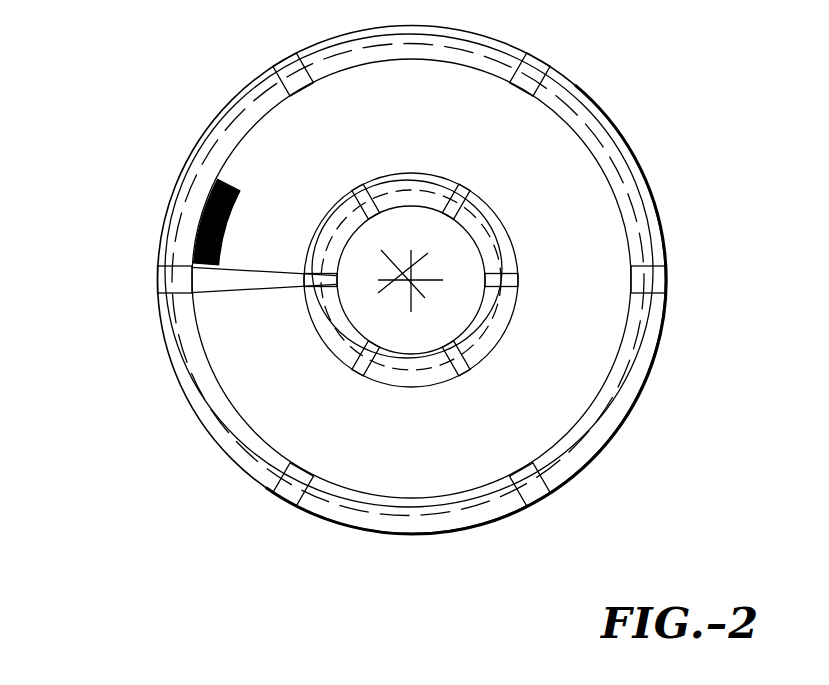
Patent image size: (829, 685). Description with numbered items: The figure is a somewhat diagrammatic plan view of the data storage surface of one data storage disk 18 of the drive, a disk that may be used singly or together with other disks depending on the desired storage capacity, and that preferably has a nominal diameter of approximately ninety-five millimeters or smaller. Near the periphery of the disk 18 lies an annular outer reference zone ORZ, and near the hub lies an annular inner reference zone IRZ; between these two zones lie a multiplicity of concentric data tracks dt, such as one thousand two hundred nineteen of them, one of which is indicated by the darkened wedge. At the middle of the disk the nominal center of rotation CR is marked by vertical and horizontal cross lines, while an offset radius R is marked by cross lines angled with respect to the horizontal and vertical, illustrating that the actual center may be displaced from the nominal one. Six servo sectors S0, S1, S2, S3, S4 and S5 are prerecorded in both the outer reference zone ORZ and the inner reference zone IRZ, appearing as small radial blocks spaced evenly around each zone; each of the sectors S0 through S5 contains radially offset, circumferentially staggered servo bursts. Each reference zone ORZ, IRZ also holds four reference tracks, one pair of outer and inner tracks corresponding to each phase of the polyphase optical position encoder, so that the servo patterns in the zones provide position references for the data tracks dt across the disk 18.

The data storage disk 18 is at (125, 436).
The outer reference zone ORZ is at (563, 187).
The inner reference zone IRZ is at (438, 302).
The nominal center of rotation CR is at (417, 276).
The offset radius R is at (397, 262).
The concentric data tracks dt is at (230, 221).
The servo sector S0 is at (158, 272).
The servo sector S1 is at (291, 53).
The servo sector S2 is at (549, 50).
The servo sector S3 is at (668, 283).
The servo sector S4 is at (545, 508).
The servo sector S5 is at (280, 500).